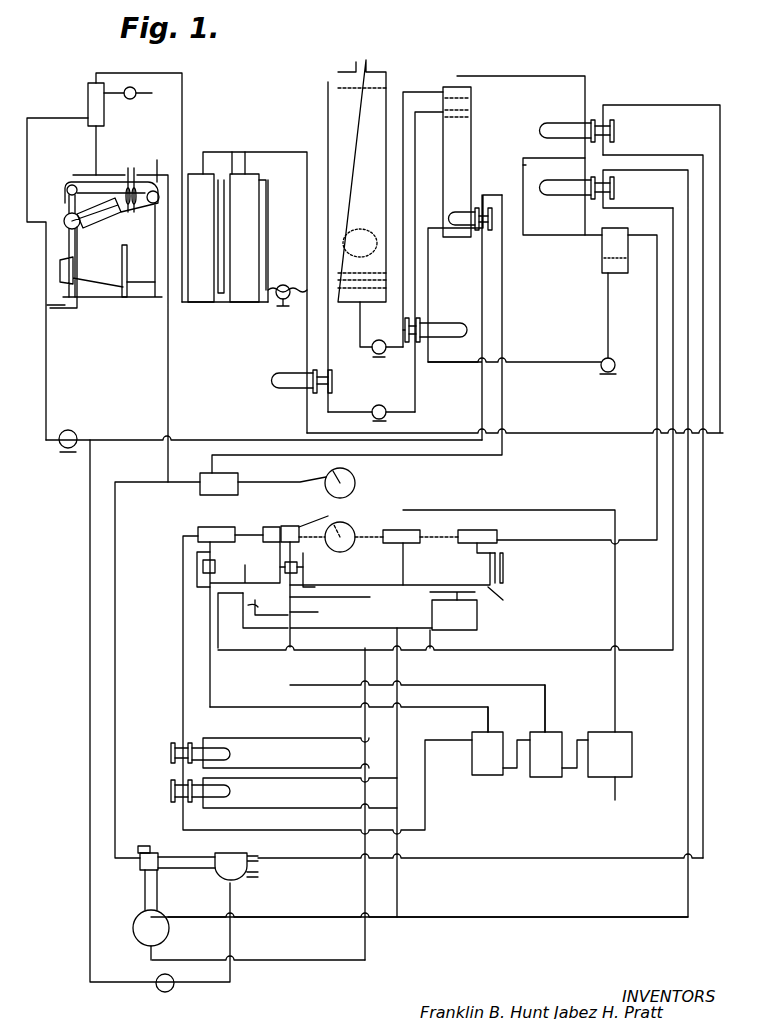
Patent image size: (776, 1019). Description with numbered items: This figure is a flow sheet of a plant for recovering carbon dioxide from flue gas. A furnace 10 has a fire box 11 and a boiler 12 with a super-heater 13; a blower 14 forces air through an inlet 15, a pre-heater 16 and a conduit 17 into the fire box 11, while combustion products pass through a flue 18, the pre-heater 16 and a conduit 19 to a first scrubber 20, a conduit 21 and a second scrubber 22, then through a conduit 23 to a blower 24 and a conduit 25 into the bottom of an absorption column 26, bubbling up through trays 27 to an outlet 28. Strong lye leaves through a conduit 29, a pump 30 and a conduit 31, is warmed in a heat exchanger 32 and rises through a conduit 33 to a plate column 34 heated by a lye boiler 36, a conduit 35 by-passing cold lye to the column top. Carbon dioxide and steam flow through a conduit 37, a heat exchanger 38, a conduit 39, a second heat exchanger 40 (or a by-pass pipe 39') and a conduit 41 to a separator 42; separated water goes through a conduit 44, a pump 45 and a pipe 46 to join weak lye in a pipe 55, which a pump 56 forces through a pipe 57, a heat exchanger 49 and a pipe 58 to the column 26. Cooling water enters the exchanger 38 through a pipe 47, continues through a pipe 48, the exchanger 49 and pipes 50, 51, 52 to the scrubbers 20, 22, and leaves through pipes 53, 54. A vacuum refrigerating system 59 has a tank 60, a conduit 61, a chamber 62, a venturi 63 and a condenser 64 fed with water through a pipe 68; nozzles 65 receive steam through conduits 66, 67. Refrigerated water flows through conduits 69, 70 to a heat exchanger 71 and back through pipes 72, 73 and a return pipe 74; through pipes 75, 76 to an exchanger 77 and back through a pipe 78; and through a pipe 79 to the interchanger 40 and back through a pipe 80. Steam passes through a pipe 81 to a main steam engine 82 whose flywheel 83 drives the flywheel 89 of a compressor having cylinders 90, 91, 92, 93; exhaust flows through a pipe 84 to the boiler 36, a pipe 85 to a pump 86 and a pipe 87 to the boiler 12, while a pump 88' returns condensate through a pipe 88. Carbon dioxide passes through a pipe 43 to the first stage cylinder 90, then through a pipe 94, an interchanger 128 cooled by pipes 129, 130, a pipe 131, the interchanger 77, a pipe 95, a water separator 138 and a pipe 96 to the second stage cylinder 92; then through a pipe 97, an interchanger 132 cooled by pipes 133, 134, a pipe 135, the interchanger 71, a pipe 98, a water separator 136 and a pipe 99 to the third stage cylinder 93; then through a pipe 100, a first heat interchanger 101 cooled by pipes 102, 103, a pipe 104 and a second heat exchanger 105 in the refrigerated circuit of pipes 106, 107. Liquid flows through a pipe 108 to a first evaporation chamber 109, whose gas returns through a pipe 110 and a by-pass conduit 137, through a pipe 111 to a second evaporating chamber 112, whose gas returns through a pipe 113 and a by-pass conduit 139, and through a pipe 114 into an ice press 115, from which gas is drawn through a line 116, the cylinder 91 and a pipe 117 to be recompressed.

The furnace 10 is at (102, 300).
The fire box 11 is at (107, 263).
The boiler 12 is at (75, 198).
The super-heater 13 is at (128, 181).
The blower 14 is at (134, 98).
The inlet 15 is at (115, 93).
The pre-heater 16 is at (88, 96).
The conduit 17 is at (52, 118).
The flue 18 is at (96, 152).
The conduit 19 is at (182, 97).
The first scrubber 20 is at (199, 298).
The conduit 21 is at (232, 152).
The second scrubber 22 is at (239, 298).
The conduit 23 is at (266, 204).
The blower 24 is at (285, 307).
The conduit 25 is at (317, 285).
The absorption column 26 is at (348, 136).
The trays 27 is at (360, 272).
The outlet 28 is at (366, 72).
The conduit 29 is at (360, 322).
The pump 30 is at (385, 335).
The conduit 31 is at (406, 342).
The heat exchanger 32 is at (443, 322).
The conduit 33 is at (415, 200).
The plate column 34 is at (471, 141).
The conduit 35 is at (416, 92).
The lye boiler 36 is at (458, 232).
The conduit 37 is at (518, 76).
The heat exchanger 38 is at (556, 126).
The conduit 39 is at (562, 188).
The pipe 39' is at (502, 177).
The second heat exchanger 40 is at (562, 196).
The conduit 41 is at (585, 224).
The separator 42 is at (602, 258).
The pipe 43 is at (657, 235).
The conduit 44 is at (608, 318).
The pump 45 is at (614, 360).
The pipe 46 is at (663, 104).
The pipe 47 is at (650, 155).
The pipe 48 is at (580, 434).
The heat exchanger 49 is at (288, 388).
The pipe 50 is at (300, 152).
The pipe 51 is at (245, 160).
The pipe 52 is at (203, 152).
The pipe 53 is at (248, 314).
The pipe 54 is at (205, 314).
The pipe 55 is at (428, 276).
The pump 56 is at (371, 403).
The pipe 57 is at (352, 412).
The pipe 58 is at (328, 100).
The refrigerating system 59 is at (136, 897).
The tank 60 is at (138, 943).
The conduit 61 is at (157, 892).
The chamber 62 is at (150, 853).
The venturi 63 is at (168, 862).
The condenser 64 is at (232, 858).
The high velocity nozzles 65 is at (140, 847).
The conduit 66 is at (165, 164).
The conduit 67 is at (140, 482).
The pipe 68 is at (258, 875).
The conduit 69 is at (362, 748).
The conduit 70 is at (335, 648).
The heat exchanger 71 is at (234, 593).
The pipe 72 is at (486, 628).
The pipe 73 is at (397, 666).
The return pipe 74 is at (326, 917).
The pipe 75 is at (378, 650).
The pipe 76 is at (432, 612).
The exchanger 77 is at (453, 620).
The pipe 78 is at (477, 615).
The pipe 79 is at (632, 196).
The pipe 80 is at (674, 208).
The pipe 81 is at (180, 482).
The main steam engine 82 is at (217, 490).
The flywheel 83 is at (355, 482).
The pipe 84 is at (502, 308).
The pipe 85 is at (242, 440).
The pump 86 is at (74, 434).
The pipe 87 is at (46, 371).
The pipe 88 is at (143, 725).
The pump 88' is at (157, 992).
The flywheel 89 is at (350, 526).
The first stage cylinder 90 is at (496, 536).
The cylinder 91 is at (418, 535).
The second stage cylinder 92 is at (294, 526).
The third stage cylinder 93 is at (238, 532).
The pipe 94 is at (495, 566).
The pipe 95 is at (395, 585).
The pipe 96 is at (276, 527).
The pipe 97 is at (280, 570).
The pipe 98 is at (221, 570).
The pipe 99 is at (197, 553).
The pipe 100 is at (183, 540).
The first heat interchanger 101 is at (183, 745).
The pipe 102 is at (232, 755).
The pipe 103 is at (222, 738).
The pipe 104 is at (183, 768).
The second heat exchanger 105 is at (171, 792).
The pipe 106 is at (326, 804).
The pipe 107 is at (346, 778).
The pipe 108 is at (304, 826).
The first evaporation chamber 109 is at (492, 775).
The pipe 110 is at (316, 738).
The pipe 111 is at (515, 775).
The second evaporating chamber 112 is at (550, 770).
The pipe 113 is at (545, 714).
The pipe 114 is at (575, 775).
The ice press 115 is at (625, 750).
The line 116 is at (455, 510).
The pipe 117 is at (403, 557).
The heat interchanger 128 is at (503, 567).
The pipe 129 is at (503, 555).
The pipe 130 is at (503, 580).
The pipe 131 is at (512, 599).
The heat interchanger 132 is at (265, 611).
The pipe 133 is at (318, 600).
The pipe 134 is at (312, 610).
The pipe 135 is at (245, 624).
The water separator 136 is at (203, 571).
The conduit 137 is at (203, 566).
The water separator 138 is at (310, 562).
The conduit 139 is at (325, 530).